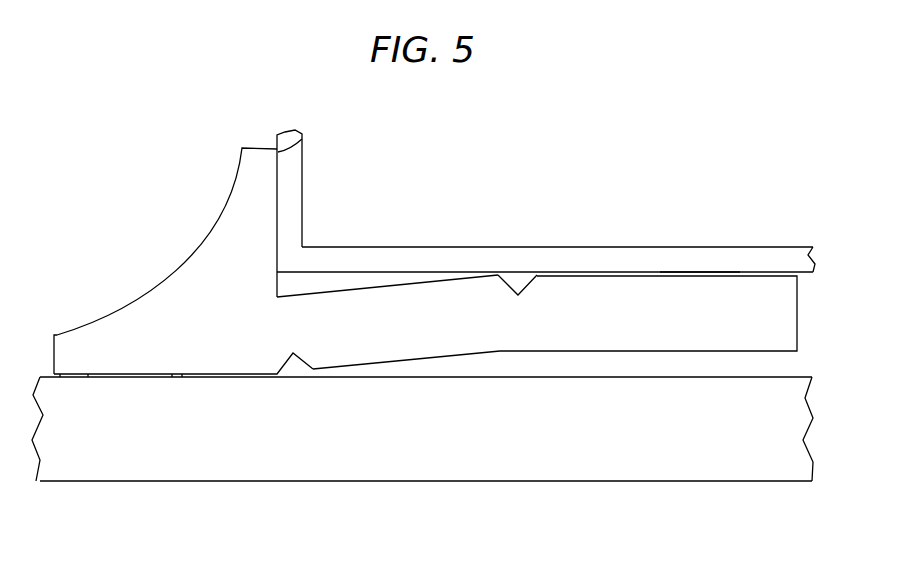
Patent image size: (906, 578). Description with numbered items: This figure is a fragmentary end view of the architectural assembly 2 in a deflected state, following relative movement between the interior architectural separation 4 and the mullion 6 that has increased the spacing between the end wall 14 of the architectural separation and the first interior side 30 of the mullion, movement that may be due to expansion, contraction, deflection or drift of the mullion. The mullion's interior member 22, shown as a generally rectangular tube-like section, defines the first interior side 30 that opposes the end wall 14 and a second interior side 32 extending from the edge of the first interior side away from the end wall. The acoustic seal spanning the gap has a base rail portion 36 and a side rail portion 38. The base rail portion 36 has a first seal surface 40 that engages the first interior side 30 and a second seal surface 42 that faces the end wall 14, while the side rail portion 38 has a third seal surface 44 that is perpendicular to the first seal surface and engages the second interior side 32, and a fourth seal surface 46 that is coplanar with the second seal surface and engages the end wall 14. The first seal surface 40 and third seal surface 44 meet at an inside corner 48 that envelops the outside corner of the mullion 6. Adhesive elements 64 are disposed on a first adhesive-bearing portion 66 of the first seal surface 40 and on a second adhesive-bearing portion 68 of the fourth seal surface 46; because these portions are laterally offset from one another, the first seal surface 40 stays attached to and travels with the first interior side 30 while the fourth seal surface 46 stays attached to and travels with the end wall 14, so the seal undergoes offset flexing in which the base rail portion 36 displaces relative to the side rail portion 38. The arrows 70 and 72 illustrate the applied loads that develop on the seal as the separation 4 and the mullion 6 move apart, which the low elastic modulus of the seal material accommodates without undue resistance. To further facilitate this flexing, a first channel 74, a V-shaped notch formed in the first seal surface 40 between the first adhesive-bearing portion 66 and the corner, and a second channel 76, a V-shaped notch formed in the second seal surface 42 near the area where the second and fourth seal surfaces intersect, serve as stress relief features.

The architectural assembly 2 is at (160, 198).
The interior architectural separation 4 is at (668, 500).
The mullion 6 is at (590, 184).
The end wall 14 is at (538, 473).
The interior member 22 is at (638, 246).
The first interior side 30 is at (388, 270).
The second interior sides 32 is at (277, 213).
The base rail portion 36 is at (522, 343).
The side rail portion 38 is at (197, 320).
The first seal surface 40 is at (588, 272).
The second seal surface 42 is at (655, 352).
The third seal surface 44 is at (302, 140).
The fourth seal surface 46 is at (60, 378).
The inside corner 48 is at (293, 270).
The adhesive elements 64 is at (738, 272).
The first adhesive-bearing portion 66 is at (688, 312).
The second adhesive-bearing portion 68 is at (179, 354).
The arrow 70 is at (708, 305).
The arrow 72 is at (130, 342).
The first channel 74 is at (515, 290).
The second channel 76 is at (287, 371).